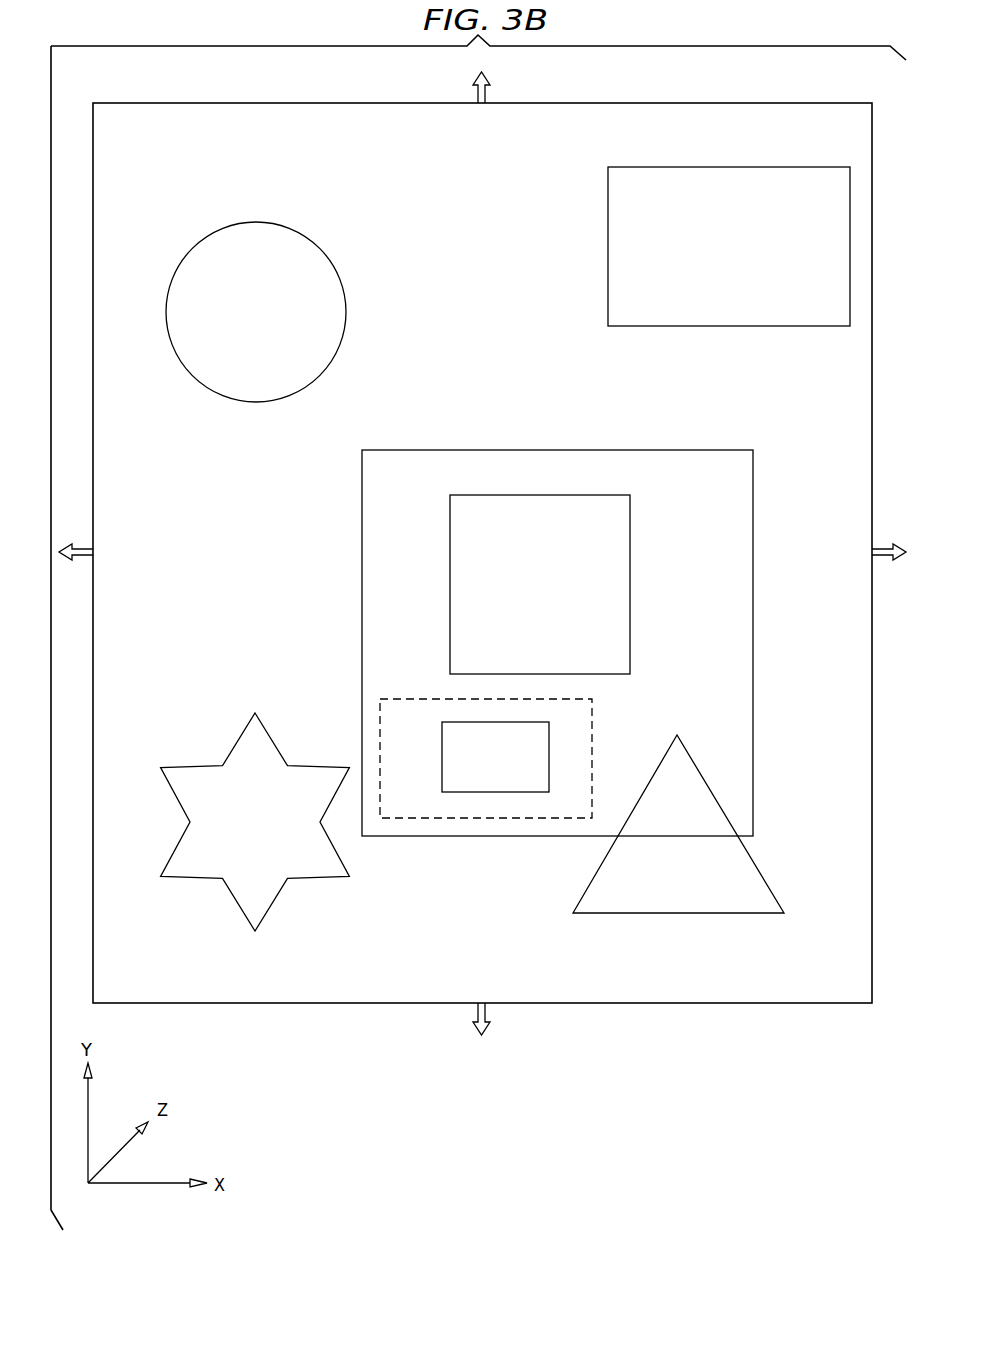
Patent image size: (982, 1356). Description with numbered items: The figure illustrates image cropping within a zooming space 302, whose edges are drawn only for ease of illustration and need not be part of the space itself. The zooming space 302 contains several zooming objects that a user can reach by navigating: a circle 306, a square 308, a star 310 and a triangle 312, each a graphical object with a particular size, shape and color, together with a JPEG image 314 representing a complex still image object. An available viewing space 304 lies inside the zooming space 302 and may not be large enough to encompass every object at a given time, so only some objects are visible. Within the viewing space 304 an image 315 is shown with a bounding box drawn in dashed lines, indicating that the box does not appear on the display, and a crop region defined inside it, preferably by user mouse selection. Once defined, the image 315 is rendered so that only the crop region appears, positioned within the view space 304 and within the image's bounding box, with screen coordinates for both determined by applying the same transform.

The zooming space 302 is at (680, 104).
The available viewing space 304 is at (634, 450).
The circle 306 is at (347, 305).
The square 308 is at (630, 530).
The star 310 is at (237, 742).
The triangle 312 is at (677, 732).
The JPEG image 314 is at (718, 167).
The image 315 is at (578, 757).